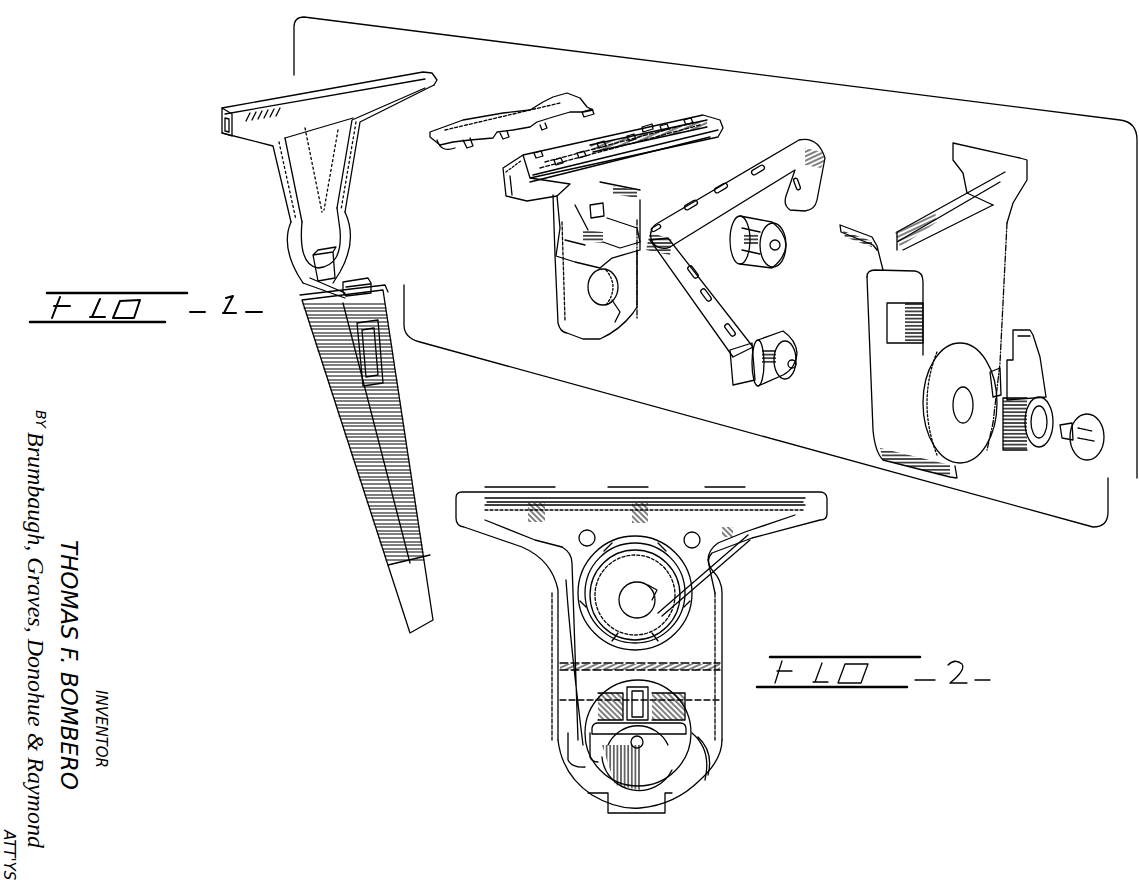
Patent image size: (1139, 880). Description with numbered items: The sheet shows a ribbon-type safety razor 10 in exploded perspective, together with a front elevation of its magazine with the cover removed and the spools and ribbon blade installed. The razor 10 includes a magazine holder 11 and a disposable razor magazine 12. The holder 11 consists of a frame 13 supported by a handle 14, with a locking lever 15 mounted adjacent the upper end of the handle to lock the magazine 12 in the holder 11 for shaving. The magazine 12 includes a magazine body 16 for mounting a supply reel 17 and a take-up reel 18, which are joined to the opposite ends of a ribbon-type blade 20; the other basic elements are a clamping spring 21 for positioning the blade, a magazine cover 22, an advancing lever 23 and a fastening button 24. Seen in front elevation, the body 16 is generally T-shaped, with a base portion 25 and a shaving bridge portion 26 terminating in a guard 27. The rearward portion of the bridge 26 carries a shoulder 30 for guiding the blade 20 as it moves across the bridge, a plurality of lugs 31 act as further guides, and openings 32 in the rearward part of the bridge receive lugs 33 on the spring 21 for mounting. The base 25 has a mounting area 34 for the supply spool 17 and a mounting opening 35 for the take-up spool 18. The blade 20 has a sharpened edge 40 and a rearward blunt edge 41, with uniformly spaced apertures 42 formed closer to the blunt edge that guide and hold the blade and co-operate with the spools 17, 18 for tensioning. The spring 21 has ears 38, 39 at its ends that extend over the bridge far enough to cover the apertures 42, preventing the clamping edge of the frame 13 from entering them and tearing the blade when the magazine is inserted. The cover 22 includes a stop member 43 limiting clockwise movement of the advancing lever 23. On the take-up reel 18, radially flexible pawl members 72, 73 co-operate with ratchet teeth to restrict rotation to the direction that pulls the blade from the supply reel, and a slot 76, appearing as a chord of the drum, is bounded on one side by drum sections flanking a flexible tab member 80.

In FIG. 1, the safety razor 10 is at (757, 65).
In FIG. 1, the magazine holder 11 is at (333, 352).
In FIG. 2, the disposable razor magazine 12 is at (737, 435).
In FIG. 1, the frame 13 is at (288, 200).
In FIG. 1, the handle 14 is at (330, 397).
In FIG. 1, the locking lever 15 is at (378, 291).
In FIG. 1, the magazine body 16 is at (591, 262).
In FIG. 2, the magazine body 16 is at (724, 590).
In FIG. 1, the supply reel 17 is at (766, 231).
In FIG. 2, the supply reel 17 is at (673, 612).
In FIG. 1, the take-up reel 18 is at (780, 334).
In FIG. 2, the take-up reel 18 is at (670, 788).
In FIG. 1, the ribbon-type blade 20 is at (735, 236).
In FIG. 2, the ribbon-type blade 20 is at (554, 558).
In FIG. 1, the clamping spring 21 is at (502, 136).
In FIG. 1, the magazine cover 22 is at (996, 270).
In FIG. 1, the advancing lever 23 is at (1037, 347).
In FIG. 1, the fastening button 24 is at (1096, 418).
In FIG. 1, the base portion 25 is at (568, 297).
In FIG. 2, the base portion 25 is at (710, 673).
In FIG. 1, the shaving bridge portion 26 is at (614, 141).
In FIG. 2, the shaving bridge portion 26 is at (490, 492).
In FIG. 1, the guard 27 is at (675, 148).
In FIG. 2, the guard 27 is at (655, 503).
In FIG. 1, the shoulder 30 is at (577, 150).
In FIG. 2, the shoulder 30 is at (568, 493).
In FIG. 1, the lugs 31 is at (640, 125).
In FIG. 1, the openings 32 is at (553, 150).
In FIG. 1, the lugs 33 is at (465, 148).
In FIG. 1, the mounting area 34 is at (605, 216).
In FIG. 1, the mounting opening 35 is at (617, 303).
In FIG. 1, the ear 38 is at (447, 149).
In FIG. 1, the ear 39 is at (586, 111).
In FIG. 1, the sharpened edge 40 is at (753, 220).
In FIG. 1, the blunt edge 41 is at (770, 180).
In FIG. 1, the apertures 42 is at (745, 170).
In FIG. 1, the stop member 43 is at (997, 370).
In FIG. 2, the pawl member 72 is at (573, 745).
In FIG. 2, the pawl member 73 is at (712, 766).
In FIG. 2, the slot 76 is at (689, 726).
In FIG. 2, the flexible tab member 80 is at (650, 688).